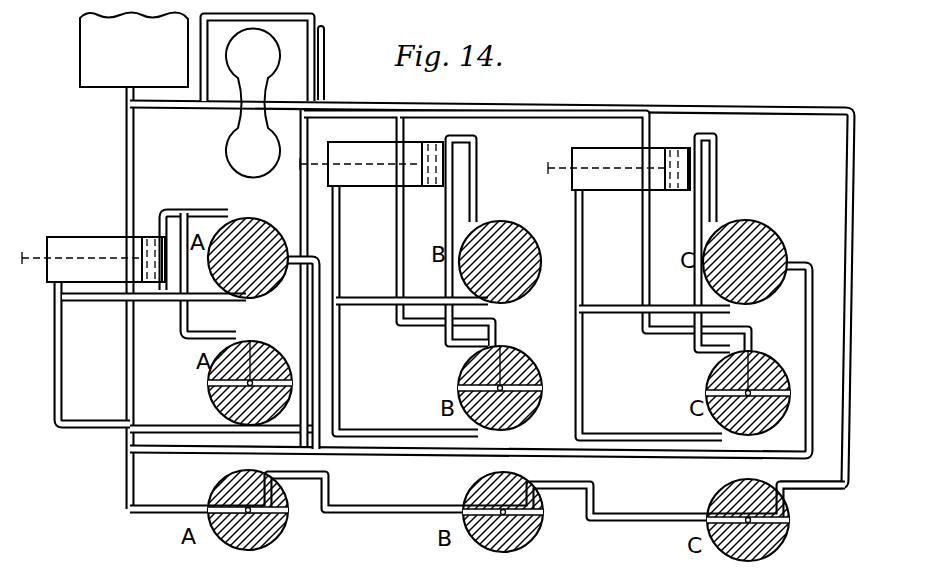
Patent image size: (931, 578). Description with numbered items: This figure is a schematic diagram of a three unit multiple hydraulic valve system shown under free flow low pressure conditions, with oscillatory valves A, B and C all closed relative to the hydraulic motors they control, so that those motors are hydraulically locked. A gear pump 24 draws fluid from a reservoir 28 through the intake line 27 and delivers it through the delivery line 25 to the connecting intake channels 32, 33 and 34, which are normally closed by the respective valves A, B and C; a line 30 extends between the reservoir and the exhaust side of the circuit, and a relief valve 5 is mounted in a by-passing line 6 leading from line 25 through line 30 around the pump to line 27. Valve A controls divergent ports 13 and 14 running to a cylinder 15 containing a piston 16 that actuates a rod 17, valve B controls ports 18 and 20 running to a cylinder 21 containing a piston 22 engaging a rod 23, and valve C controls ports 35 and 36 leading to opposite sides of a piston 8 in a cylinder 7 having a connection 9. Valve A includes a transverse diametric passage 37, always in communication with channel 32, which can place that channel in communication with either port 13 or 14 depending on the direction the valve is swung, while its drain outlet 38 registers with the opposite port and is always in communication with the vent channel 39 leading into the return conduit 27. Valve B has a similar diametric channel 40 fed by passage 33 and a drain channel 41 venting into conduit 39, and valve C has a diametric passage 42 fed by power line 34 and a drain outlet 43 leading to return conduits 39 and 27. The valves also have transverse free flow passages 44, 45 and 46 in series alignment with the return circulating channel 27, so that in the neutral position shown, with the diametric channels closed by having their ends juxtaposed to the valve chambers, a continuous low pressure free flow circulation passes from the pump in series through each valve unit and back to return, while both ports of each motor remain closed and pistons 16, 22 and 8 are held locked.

The relief valve 5 is at (326, 43).
The by-passing line 6 is at (206, 52).
The cylinder 7 is at (631, 156).
The piston 8 is at (668, 178).
The connection 9 is at (552, 162).
The port 13 is at (208, 222).
The port 14 is at (177, 426).
The cylinder 15 is at (70, 236).
The piston 16 is at (160, 230).
The rod 17 is at (30, 252).
The port 18 is at (458, 206).
The port 20 is at (430, 295).
The cylinder 21 is at (370, 186).
The piston 22 is at (426, 185).
The rod 23 is at (361, 187).
The gear pump 24 is at (253, 103).
The delivery line 25 is at (352, 106).
The intake line 27 is at (838, 121).
The reservoir 28 is at (82, 45).
The line 30 is at (182, 109).
The intake channel 32 is at (310, 130).
The intake channel 33 is at (405, 123).
The intake channel 34 is at (650, 132).
The port 35 is at (703, 204).
The port 36 is at (680, 307).
The transverse diametric passage 37 is at (215, 383).
The drain outlet 38 is at (292, 233).
The vent channel 39 is at (312, 451).
The diametric channel 40 is at (462, 390).
The drain channel 41 is at (541, 253).
The diametric passage 42 is at (755, 385).
The drain outlet 43 is at (785, 262).
The transverse free flow passage 44 is at (218, 493).
The transverse free flow passage 45 is at (533, 533).
The transverse free flow passage 46 is at (782, 533).